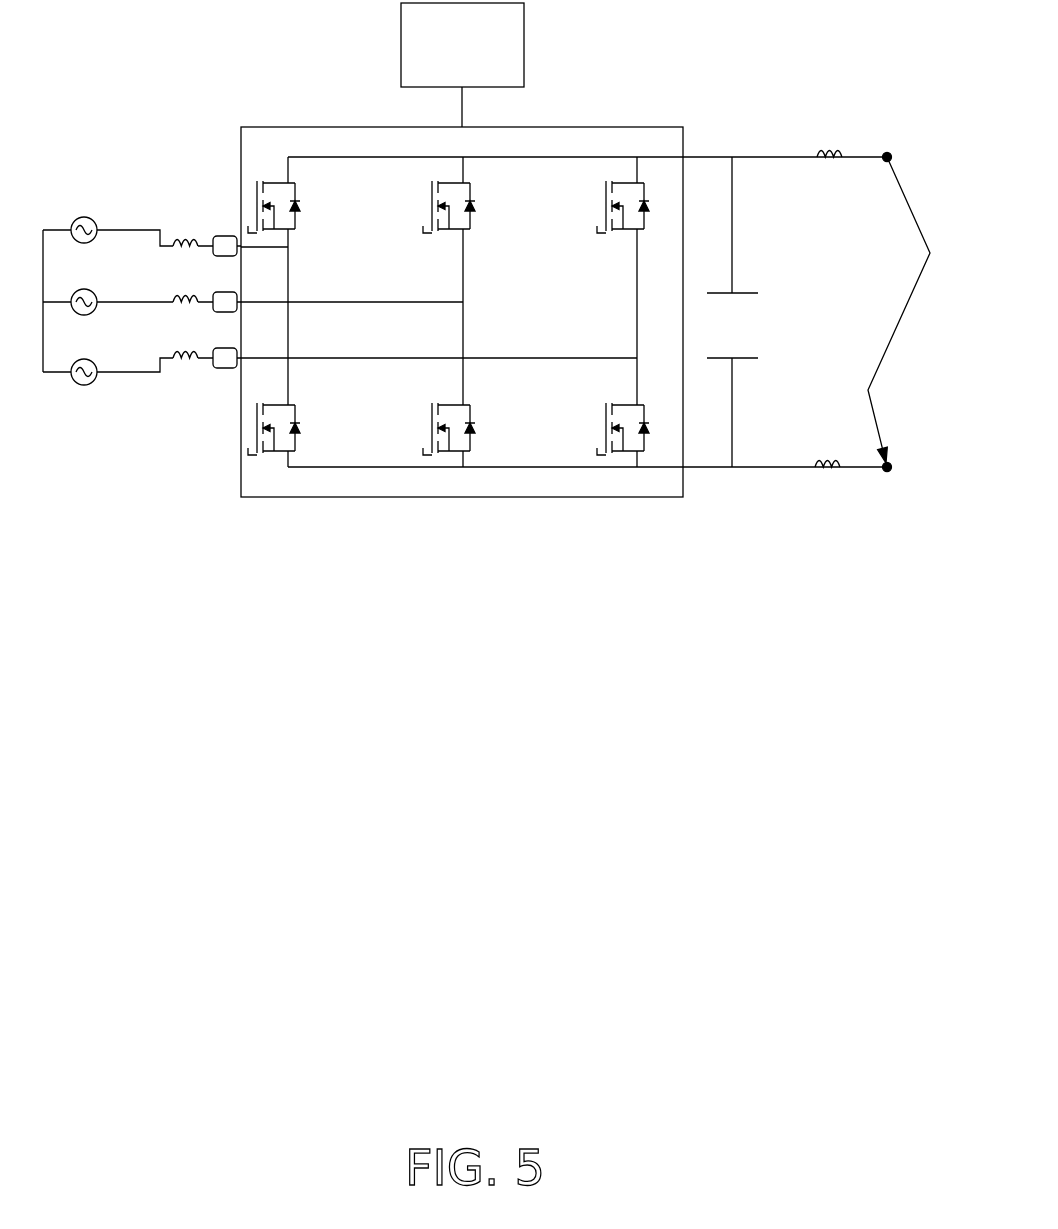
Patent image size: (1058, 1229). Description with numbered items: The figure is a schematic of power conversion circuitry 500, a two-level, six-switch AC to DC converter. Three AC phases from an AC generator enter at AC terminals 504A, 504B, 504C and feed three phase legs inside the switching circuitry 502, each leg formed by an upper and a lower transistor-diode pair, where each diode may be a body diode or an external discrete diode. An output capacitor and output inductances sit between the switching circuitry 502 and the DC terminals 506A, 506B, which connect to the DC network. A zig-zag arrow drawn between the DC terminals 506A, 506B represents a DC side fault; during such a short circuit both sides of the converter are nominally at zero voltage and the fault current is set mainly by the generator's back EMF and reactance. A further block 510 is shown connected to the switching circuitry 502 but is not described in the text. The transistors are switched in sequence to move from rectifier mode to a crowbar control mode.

The power conversion circuitry 500 is at (159, 79).
The power converter 502 is at (462, 497).
The AC terminal 504A is at (227, 236).
The AC terminal 504B is at (227, 314).
The AC terminal 504C is at (227, 371).
The DC terminal 506A is at (887, 152).
The DC terminal 506B is at (887, 472).
The controller 510 is at (484, 59).